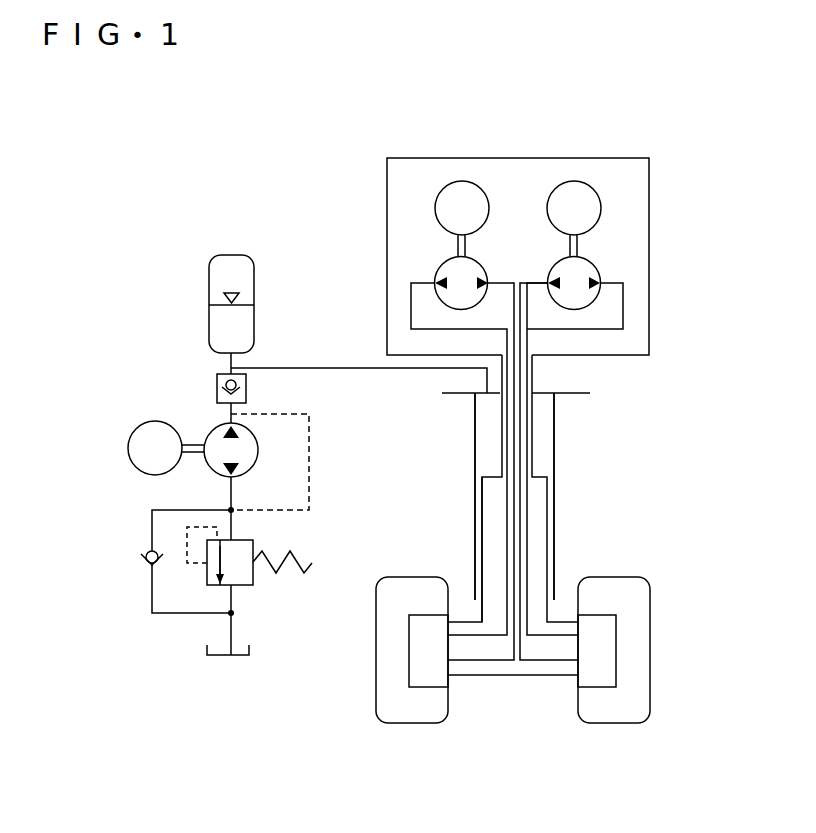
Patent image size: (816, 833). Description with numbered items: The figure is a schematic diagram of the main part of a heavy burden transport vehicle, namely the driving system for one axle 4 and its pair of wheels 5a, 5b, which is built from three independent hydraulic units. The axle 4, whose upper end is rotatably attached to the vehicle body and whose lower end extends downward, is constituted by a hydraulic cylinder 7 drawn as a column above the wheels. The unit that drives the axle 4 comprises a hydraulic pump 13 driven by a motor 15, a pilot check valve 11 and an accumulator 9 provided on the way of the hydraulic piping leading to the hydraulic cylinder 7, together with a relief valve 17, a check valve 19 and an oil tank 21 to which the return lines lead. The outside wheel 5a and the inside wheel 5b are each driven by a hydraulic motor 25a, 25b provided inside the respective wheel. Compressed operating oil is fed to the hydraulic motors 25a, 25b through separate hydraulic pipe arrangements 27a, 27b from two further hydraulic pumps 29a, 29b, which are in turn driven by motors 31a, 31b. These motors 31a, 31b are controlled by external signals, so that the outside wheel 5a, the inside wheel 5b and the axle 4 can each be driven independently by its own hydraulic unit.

The axle 4 is at (568, 467).
The outside wheel 5a is at (385, 723).
The inside wheel 5b is at (645, 722).
The hydraulic cylinder 7 is at (475, 437).
The accumulator 9 is at (209, 283).
The pilot check valve 11 is at (246, 388).
The hydraulic pump 13 is at (258, 450).
The motor 15 is at (137, 463).
The relief valve 17 is at (253, 585).
The check valve 19 is at (147, 560).
The oil tank 21 is at (207, 650).
The hydraulic motor 25a is at (432, 678).
The hydraulic motor 25b is at (588, 673).
The hydraulic pipe arrangement 27a is at (411, 307).
The hydraulic pipe arrangement 27b is at (623, 317).
The hydraulic pump 29a is at (435, 275).
The hydraulic pump 29b is at (600, 275).
The motor 31a is at (454, 182).
The motor 31b is at (588, 183).